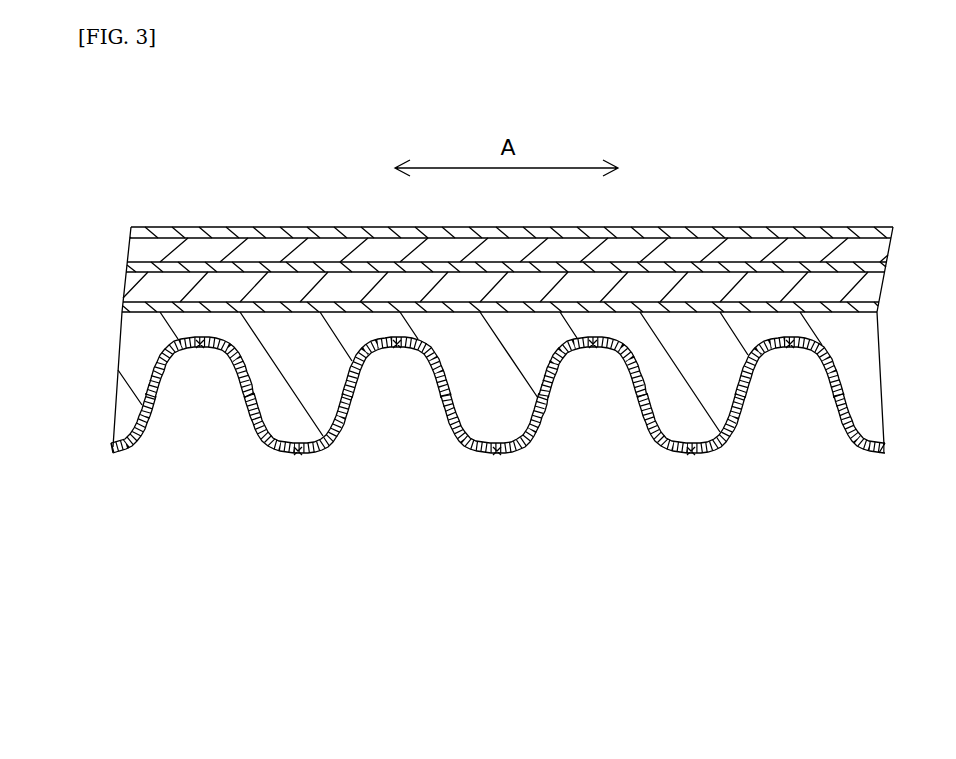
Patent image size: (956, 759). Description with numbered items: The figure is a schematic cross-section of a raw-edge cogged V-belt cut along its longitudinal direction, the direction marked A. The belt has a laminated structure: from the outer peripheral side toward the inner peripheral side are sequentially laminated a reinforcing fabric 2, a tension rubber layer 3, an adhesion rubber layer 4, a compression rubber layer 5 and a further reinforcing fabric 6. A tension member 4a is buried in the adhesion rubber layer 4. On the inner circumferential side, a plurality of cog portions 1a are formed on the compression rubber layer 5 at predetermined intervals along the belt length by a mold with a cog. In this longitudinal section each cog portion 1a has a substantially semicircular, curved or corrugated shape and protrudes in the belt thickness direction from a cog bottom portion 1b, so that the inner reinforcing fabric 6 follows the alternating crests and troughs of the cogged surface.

The cog portion 1a is at (298, 458).
The cog bottom portion 1b is at (200, 348).
The reinforcing fabric 2 is at (228, 230).
The tension rubber layer 3 is at (285, 245).
The adhesion rubber layer 4 is at (515, 278).
The tension member 4a is at (785, 282).
The compression rubber layer 5 is at (508, 397).
The reinforcing fabric 6 is at (498, 494).